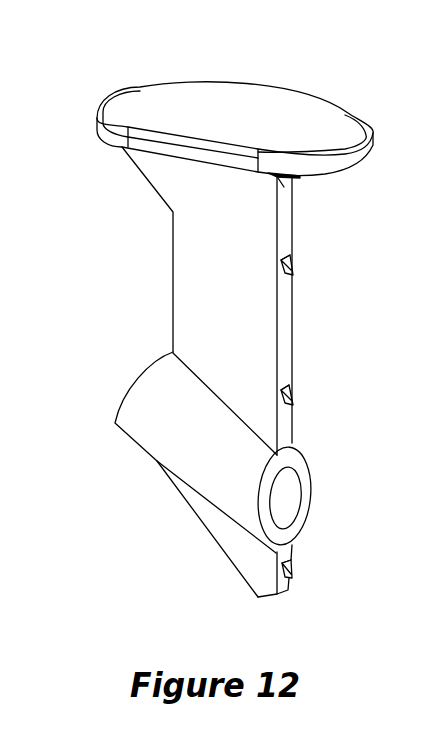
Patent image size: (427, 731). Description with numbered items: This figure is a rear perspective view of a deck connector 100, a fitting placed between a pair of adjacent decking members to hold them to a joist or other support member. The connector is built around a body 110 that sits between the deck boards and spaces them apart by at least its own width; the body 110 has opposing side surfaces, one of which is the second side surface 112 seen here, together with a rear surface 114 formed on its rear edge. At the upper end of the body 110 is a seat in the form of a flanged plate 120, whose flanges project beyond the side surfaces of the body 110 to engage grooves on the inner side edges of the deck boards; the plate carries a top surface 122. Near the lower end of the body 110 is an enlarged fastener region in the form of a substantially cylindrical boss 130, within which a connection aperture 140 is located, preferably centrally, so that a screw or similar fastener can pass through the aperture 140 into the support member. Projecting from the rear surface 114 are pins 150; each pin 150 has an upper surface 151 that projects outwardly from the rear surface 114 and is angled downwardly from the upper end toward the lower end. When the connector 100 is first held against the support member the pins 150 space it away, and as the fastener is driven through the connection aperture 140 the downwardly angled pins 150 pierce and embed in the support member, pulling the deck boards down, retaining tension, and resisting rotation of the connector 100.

The deck connector 100 is at (221, 304).
The body 110 is at (221, 372).
The second side surface 112 is at (184, 290).
The rear surface 114 is at (290, 329).
The flanged plate 120 is at (235, 95).
The top surface 122 is at (193, 93).
The boss 130 is at (121, 410).
The connection aperture 140 is at (287, 498).
The pin 150 is at (287, 262).
The upper surface 151 is at (292, 253).